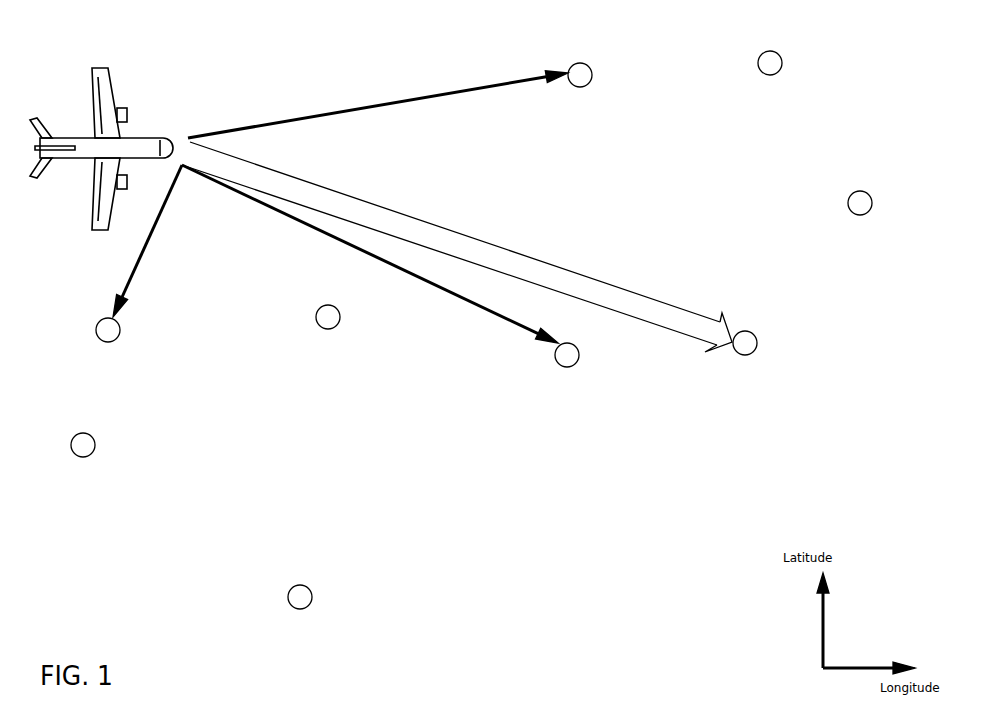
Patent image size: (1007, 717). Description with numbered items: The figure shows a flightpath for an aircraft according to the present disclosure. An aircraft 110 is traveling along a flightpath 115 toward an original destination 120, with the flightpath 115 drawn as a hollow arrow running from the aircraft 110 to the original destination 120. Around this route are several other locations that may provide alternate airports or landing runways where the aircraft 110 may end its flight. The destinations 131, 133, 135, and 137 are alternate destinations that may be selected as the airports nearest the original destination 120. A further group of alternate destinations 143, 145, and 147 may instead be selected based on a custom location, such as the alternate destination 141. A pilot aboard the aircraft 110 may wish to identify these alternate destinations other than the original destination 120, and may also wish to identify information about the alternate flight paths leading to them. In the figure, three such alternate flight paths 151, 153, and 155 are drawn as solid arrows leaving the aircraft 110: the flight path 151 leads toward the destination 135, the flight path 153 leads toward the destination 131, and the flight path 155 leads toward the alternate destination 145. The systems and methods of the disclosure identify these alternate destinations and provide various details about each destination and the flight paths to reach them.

The aircraft 110 is at (108, 90).
The flightpath 115 is at (495, 246).
The original destination 120 is at (757, 345).
The destination 131 is at (579, 358).
The destination 133 is at (852, 193).
The destination 135 is at (592, 76).
The destination 137 is at (757, 68).
The alternate destination 141 is at (316, 322).
The alternate destination 143 is at (318, 598).
The alternate destination 145 is at (120, 332).
The alternate destination 147 is at (95, 448).
The flight path 151 is at (440, 88).
The flight path 153 is at (313, 226).
The flight path 155 is at (137, 263).